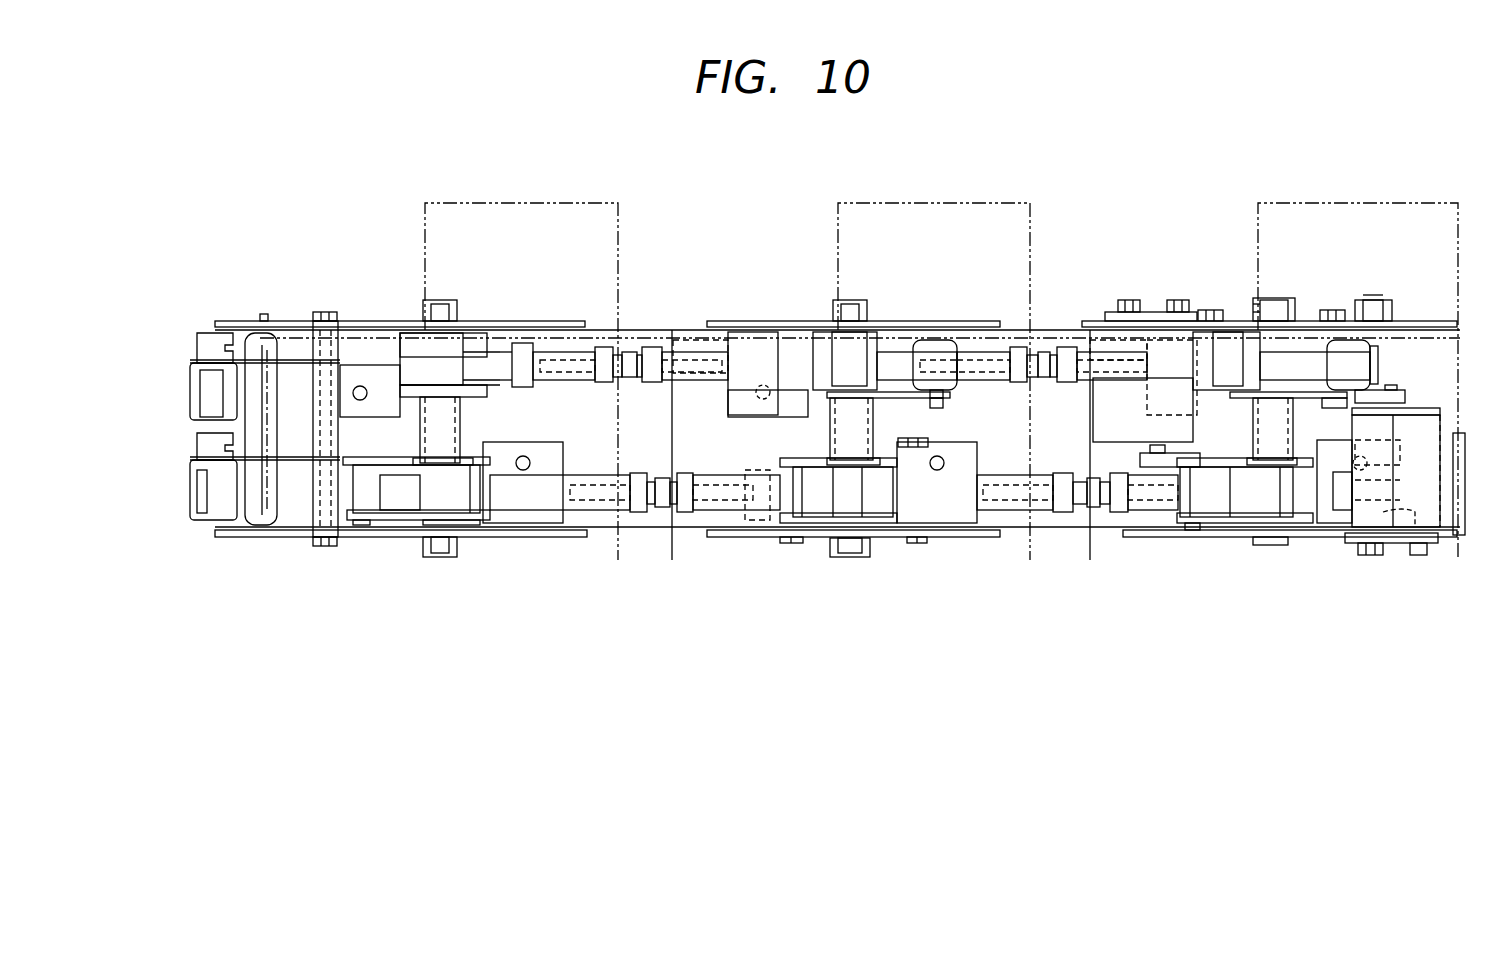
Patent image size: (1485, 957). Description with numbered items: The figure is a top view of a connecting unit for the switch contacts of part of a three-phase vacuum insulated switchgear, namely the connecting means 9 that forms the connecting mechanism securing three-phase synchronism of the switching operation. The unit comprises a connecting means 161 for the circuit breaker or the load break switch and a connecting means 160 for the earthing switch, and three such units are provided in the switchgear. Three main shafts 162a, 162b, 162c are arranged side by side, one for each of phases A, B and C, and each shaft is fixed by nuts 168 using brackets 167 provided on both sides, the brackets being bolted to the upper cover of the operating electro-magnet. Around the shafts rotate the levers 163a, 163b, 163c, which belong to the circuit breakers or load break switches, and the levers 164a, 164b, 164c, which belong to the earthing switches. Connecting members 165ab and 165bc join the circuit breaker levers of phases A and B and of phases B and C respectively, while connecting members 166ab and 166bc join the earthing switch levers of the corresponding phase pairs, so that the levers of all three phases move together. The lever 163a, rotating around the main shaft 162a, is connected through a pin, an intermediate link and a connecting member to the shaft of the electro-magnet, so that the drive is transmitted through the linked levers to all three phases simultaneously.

The connecting means 9 is at (248, 320).
The connecting means for the earthing switch 160 is at (190, 490).
The connecting means for the circuit breaker or load break switch 161 is at (190, 398).
The bracket 167 is at (283, 318).
The nut 168 is at (338, 320).
The main shaft 162a is at (447, 415).
The main shaft 162b is at (848, 418).
The main shaft 162c is at (1280, 417).
The lever 163a is at (408, 335).
The lever 163b is at (823, 330).
The lever 163c is at (1233, 322).
The lever 164a is at (378, 472).
The lever 164b is at (760, 467).
The lever 164c is at (1222, 470).
The connecting member 165ab is at (630, 330).
The connecting member 165bc is at (1043, 336).
The connecting member 166ab is at (637, 472).
The connecting member 166bc is at (1018, 480).